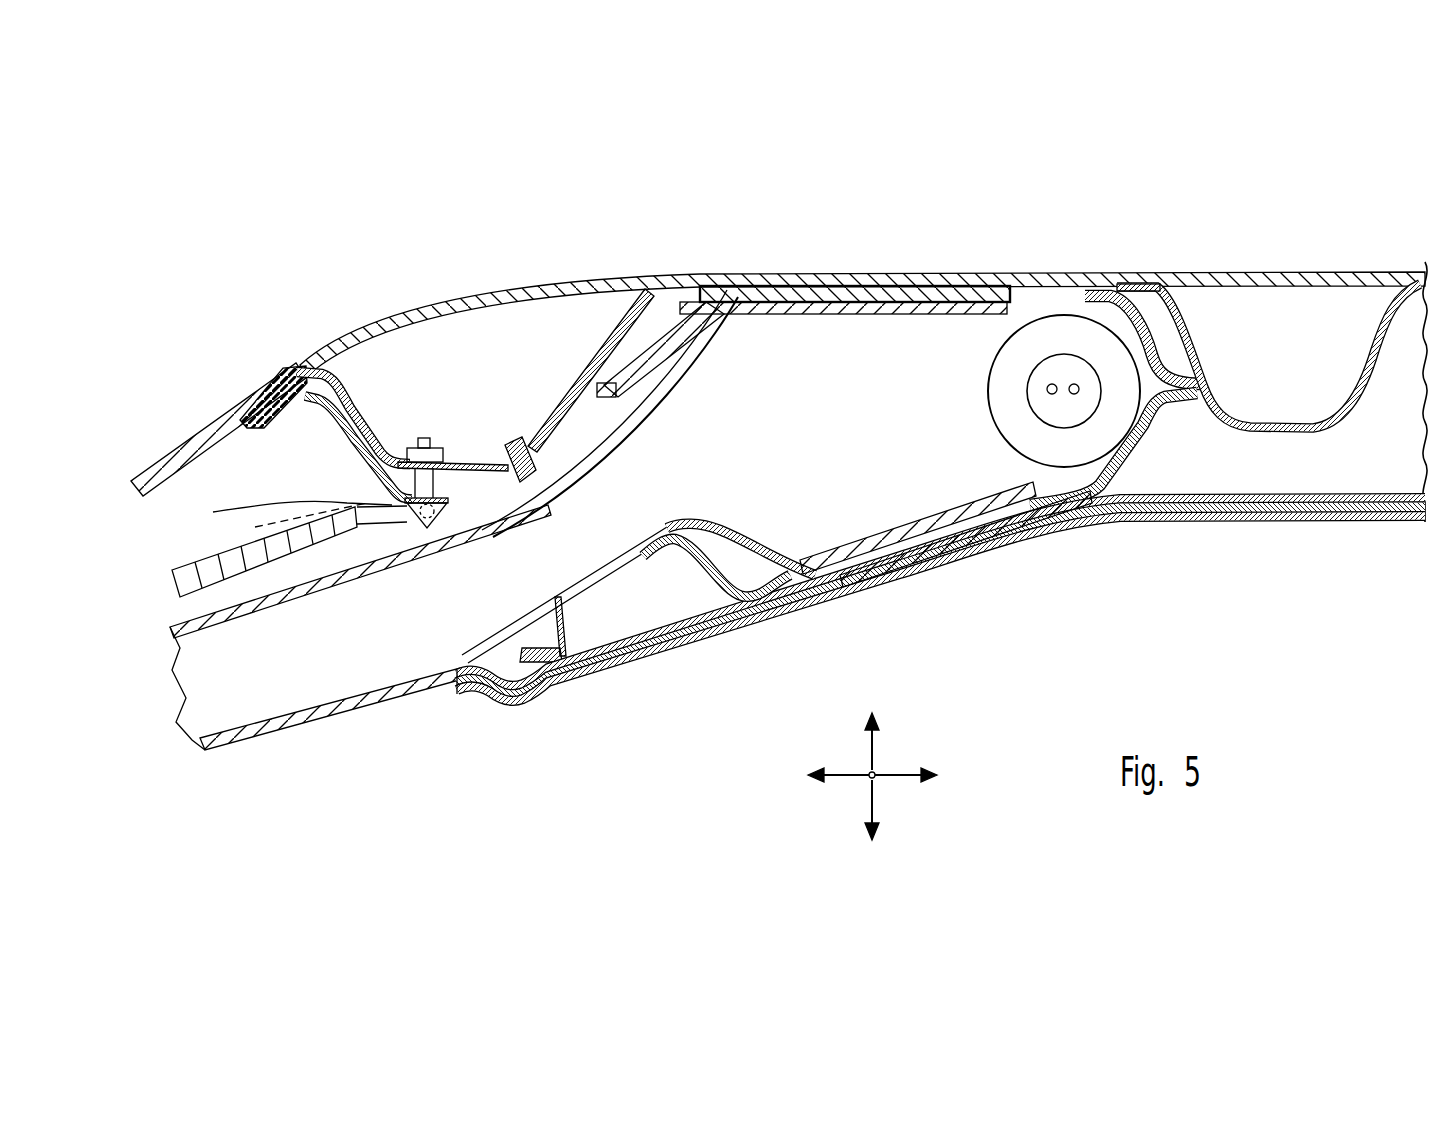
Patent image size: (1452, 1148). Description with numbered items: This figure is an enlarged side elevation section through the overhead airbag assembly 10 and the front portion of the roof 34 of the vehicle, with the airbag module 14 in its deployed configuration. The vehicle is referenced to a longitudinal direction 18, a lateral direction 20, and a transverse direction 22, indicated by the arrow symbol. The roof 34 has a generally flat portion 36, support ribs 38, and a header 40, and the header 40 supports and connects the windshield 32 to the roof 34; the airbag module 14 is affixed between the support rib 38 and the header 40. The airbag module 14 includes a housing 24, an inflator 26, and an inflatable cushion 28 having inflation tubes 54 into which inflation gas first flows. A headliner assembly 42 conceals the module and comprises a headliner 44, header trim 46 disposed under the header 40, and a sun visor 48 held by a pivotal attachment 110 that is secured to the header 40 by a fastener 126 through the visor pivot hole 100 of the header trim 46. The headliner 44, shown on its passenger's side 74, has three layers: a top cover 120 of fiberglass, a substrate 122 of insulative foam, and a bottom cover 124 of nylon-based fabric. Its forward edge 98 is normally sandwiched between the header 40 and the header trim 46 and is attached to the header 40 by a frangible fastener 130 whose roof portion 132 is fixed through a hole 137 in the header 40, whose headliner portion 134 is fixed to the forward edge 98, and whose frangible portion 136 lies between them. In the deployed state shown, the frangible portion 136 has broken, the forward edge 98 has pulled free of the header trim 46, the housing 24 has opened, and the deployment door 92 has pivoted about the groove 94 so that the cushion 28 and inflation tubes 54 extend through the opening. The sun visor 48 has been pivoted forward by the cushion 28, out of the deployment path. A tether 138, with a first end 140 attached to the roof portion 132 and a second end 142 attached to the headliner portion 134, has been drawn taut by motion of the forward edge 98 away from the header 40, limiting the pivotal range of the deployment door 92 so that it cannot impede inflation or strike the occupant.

The overhead airbag assembly 10 is at (800, 203).
The airbag module 14 is at (1007, 277).
The longitudinal direction 18 is at (898, 775).
The lateral direction 20 is at (865, 782).
The transverse direction 22 is at (877, 738).
The housing 24 is at (942, 287).
The inflator 26 is at (1074, 349).
The cushion 28 is at (965, 300).
The windshield 32 is at (195, 433).
The roof 34 is at (878, 270).
The generally flat portion 36 is at (740, 273).
The support ribs 38 is at (1195, 345).
The header 40 is at (613, 337).
The headliner assembly 42 is at (477, 705).
The headliner 44 is at (1262, 523).
The header trim 46 is at (333, 437).
The sun visor 48 is at (196, 563).
The inflation tubes 54 is at (460, 540).
The passenger's side 74 is at (1127, 525).
The deployment door 92 is at (925, 588).
The groove 94 is at (1068, 500).
The forward edge 98 is at (468, 685).
The visor pivot hole 100 is at (290, 524).
The pivotal attachment 110 is at (403, 537).
The top cover 120 is at (628, 652).
The substrate 122 is at (657, 655).
The bottom cover 124 is at (708, 645).
The fastener 126 is at (287, 509).
The frangible fastener 130 is at (512, 433).
The roof portion 132 is at (528, 432).
The headliner portion 134 is at (549, 688).
The frangible portion 136 is at (507, 488).
The hole 137 is at (482, 463).
The tether 138 is at (568, 627).
The first end 140 is at (426, 438).
The second end 142 is at (517, 653).